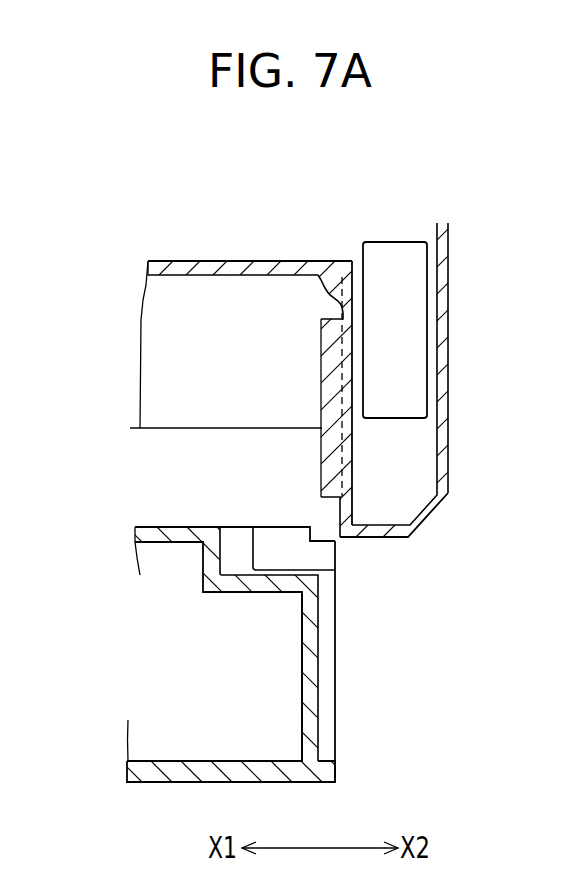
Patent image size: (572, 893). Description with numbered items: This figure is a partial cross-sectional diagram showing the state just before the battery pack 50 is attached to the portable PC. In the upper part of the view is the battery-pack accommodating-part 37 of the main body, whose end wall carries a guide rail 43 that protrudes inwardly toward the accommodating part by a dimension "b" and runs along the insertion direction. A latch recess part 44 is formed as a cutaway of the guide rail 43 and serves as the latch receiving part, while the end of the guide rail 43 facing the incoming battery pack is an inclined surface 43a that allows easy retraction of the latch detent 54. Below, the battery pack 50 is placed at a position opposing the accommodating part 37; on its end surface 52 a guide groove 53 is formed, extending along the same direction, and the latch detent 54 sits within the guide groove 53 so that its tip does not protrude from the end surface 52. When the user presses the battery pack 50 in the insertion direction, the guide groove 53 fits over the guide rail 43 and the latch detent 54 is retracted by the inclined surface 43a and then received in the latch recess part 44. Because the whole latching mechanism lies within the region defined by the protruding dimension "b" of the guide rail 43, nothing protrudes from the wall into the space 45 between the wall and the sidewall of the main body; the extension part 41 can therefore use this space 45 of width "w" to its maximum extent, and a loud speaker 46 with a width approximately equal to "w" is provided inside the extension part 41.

The battery-pack accommodating-part 37 is at (168, 311).
The extension part 41 is at (448, 417).
The guide rail 43 is at (322, 450).
The inclined surface 43a is at (322, 495).
The latch recess part 44 is at (323, 312).
The space 45 is at (403, 498).
The loud speaker 46 is at (415, 293).
The battery pack 50 is at (164, 788).
The end surface 52 is at (335, 713).
The guide groove 53 is at (330, 665).
The latch detent 54 is at (316, 545).